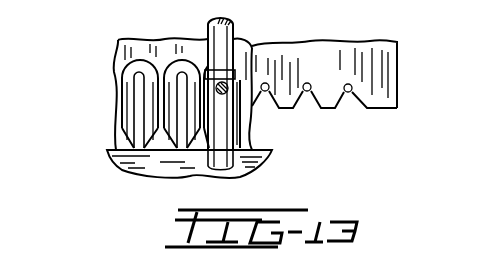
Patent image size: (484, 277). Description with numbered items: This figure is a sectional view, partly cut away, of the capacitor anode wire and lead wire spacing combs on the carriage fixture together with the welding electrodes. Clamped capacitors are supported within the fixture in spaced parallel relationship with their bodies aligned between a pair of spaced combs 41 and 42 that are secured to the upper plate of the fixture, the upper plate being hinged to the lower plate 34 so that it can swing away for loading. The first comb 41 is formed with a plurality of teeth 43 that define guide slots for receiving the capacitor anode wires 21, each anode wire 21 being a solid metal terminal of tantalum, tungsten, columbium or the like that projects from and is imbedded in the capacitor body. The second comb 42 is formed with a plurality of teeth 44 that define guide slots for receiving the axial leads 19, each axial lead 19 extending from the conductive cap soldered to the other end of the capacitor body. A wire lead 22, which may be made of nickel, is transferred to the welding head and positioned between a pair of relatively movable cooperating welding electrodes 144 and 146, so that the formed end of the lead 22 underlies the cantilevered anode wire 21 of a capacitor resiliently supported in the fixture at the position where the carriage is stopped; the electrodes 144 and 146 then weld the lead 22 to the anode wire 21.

The comb 41 is at (118, 44).
The anode wire 21 is at (136, 78).
The welding electrode 144 is at (236, 30).
The comb 42 is at (383, 53).
The axial lead 19 is at (344, 88).
The teeth 43 is at (117, 131).
The lower plate 34 is at (123, 172).
The welding electrode 146 is at (212, 160).
The lead 22 is at (240, 106).
The teeth 44 is at (335, 109).